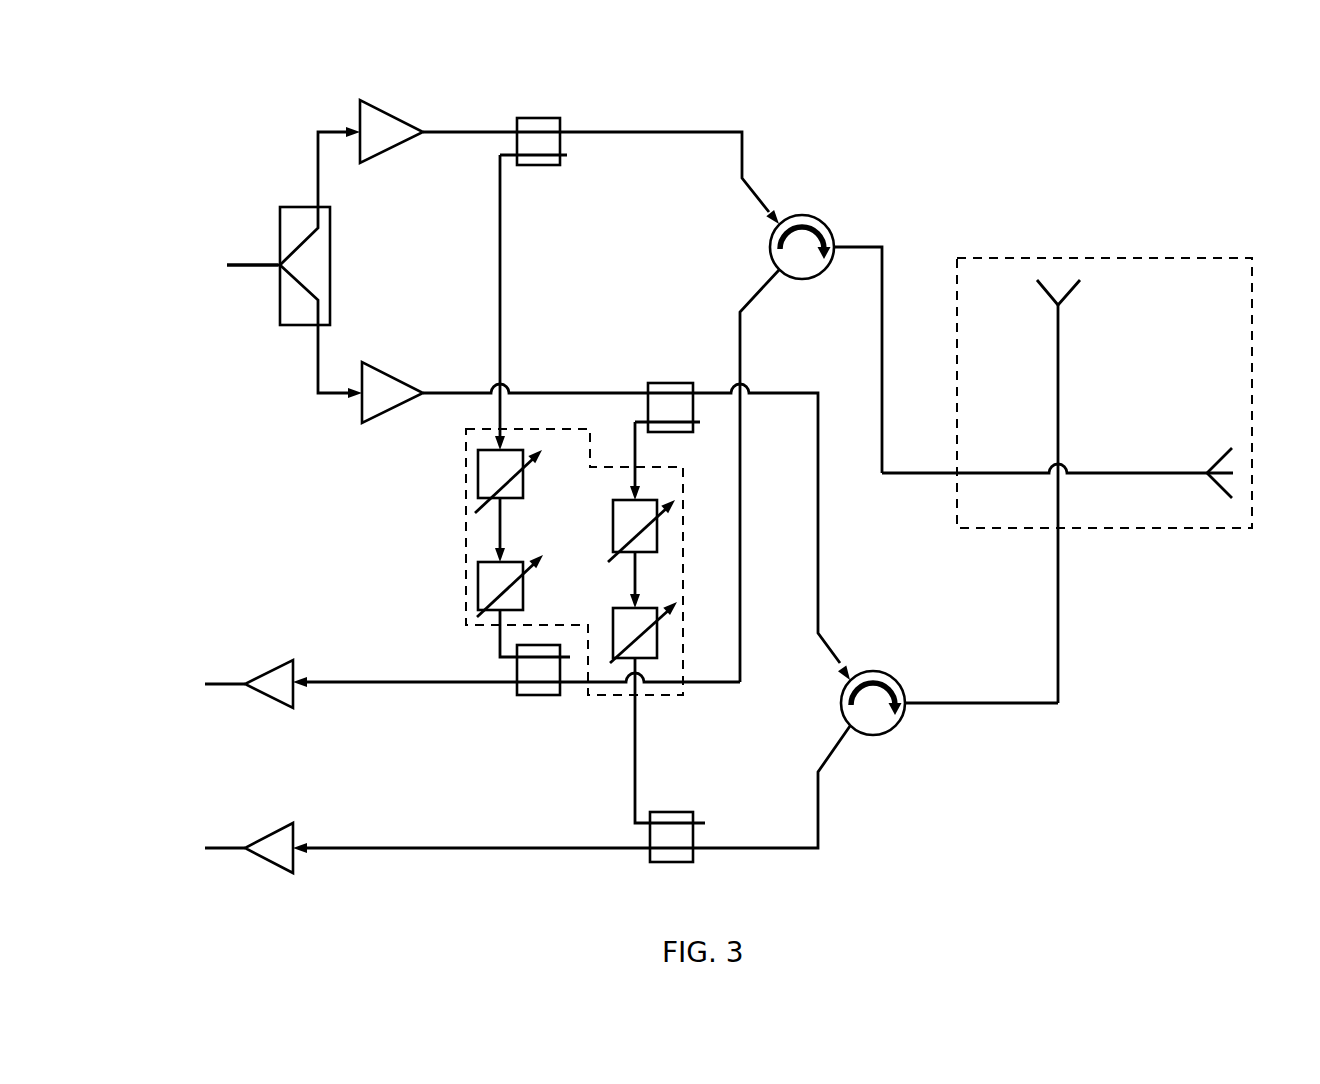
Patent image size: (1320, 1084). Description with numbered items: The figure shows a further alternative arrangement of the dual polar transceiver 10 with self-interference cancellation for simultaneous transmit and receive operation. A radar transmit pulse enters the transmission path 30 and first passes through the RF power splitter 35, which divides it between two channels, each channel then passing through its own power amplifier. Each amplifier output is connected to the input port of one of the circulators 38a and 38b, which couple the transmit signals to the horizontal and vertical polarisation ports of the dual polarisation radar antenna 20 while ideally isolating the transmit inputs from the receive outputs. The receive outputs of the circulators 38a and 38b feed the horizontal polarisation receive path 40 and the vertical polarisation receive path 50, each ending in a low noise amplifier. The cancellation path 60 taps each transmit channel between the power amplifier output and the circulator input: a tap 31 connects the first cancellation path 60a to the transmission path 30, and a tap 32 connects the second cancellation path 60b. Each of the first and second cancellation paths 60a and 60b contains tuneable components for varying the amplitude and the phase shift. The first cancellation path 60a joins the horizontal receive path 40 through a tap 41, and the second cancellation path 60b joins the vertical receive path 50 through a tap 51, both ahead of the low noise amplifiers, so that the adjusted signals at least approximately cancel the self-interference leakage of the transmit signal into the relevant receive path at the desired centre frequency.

The dual polar transceiver 10 is at (704, 471).
The dual polarisation radar antenna 20 is at (1162, 258).
The transmission path 30 is at (240, 263).
The tap 31 is at (535, 117).
The tap 32 is at (662, 382).
The RF power splitter 35 is at (308, 263).
The circulator 38a is at (830, 225).
The circulator 38b is at (898, 722).
The horizontal polarisation receive path 40 is at (350, 678).
The tap 41 is at (535, 697).
The vertical polarisation receive path 50 is at (352, 845).
The tap 51 is at (670, 811).
The cancellation path 60 is at (463, 450).
The first cancellation path 60a is at (497, 520).
The second cancellation path 60b is at (633, 583).